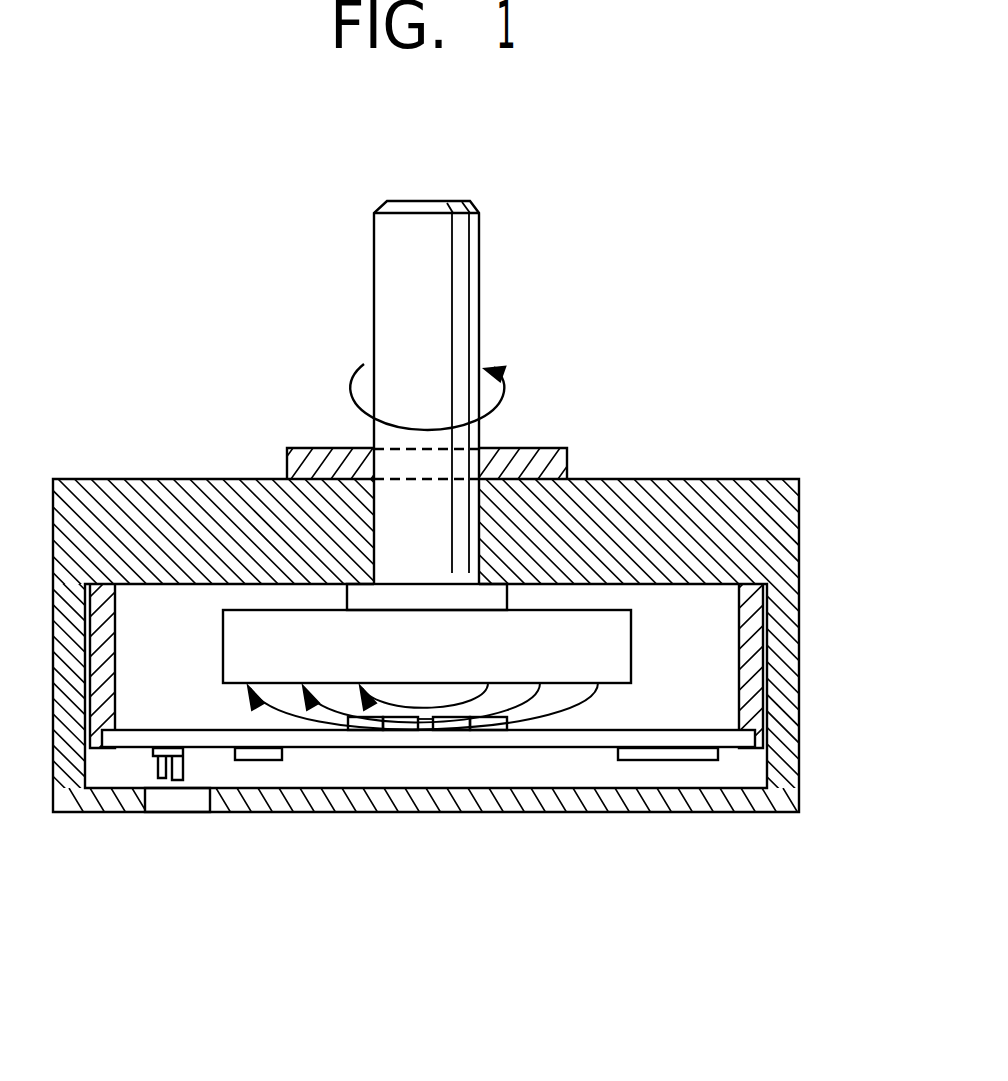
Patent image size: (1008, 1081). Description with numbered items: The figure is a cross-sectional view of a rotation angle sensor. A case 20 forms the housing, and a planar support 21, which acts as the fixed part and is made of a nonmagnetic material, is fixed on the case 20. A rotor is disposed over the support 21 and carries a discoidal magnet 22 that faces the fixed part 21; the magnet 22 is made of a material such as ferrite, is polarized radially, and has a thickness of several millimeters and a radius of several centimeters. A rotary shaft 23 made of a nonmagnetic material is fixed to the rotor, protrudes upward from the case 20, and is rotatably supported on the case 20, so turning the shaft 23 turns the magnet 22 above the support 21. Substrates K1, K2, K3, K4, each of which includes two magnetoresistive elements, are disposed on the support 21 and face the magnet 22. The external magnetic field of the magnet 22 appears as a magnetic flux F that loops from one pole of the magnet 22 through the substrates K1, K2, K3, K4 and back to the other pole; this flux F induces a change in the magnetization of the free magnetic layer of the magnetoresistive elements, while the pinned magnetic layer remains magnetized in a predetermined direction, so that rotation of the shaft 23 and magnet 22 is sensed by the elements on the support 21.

The case 20 is at (772, 517).
The planar support 21 is at (680, 738).
The discoidal magnet 22 is at (631, 632).
The rotary shaft 23 is at (403, 294).
The magnetic flux F is at (577, 716).
The substrate K1 is at (500, 722).
The substrate K2 is at (400, 723).
The substrate K3 is at (444, 723).
The substrate K4 is at (488, 723).